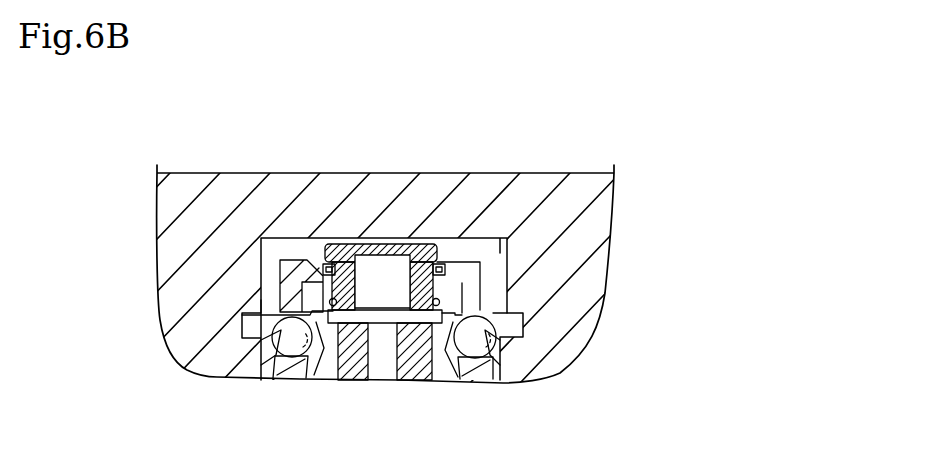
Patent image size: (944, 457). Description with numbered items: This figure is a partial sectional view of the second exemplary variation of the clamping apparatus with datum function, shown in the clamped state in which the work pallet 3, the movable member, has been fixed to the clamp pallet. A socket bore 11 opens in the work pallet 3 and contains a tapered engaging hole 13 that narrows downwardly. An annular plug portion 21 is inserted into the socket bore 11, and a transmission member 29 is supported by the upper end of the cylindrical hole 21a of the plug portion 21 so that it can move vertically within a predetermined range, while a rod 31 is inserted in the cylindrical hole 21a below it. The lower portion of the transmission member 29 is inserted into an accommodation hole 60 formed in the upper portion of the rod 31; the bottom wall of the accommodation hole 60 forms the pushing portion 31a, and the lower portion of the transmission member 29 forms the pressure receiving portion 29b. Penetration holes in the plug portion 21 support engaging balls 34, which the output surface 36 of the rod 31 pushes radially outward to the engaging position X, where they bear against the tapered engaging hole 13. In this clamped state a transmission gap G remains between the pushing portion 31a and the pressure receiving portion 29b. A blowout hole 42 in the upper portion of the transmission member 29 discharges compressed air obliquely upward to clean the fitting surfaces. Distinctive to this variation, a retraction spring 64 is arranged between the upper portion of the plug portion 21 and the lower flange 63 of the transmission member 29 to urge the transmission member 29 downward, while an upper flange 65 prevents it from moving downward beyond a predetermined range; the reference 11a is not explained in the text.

The work pallet 3 is at (563, 174).
The engaging position X is at (213, 94).
The socket bore 11 is at (500, 259).
The housing projection 11a is at (440, 260).
The tapered engaging hole 13 is at (258, 360).
The plug portion 21 is at (293, 251).
The cylindrical hole 21a is at (310, 380).
The transmission member 29 is at (383, 217).
The pressure receiving portion 29b is at (388, 242).
The rod 31 is at (447, 370).
The pushing portion 31a is at (407, 360).
The engaging ball 34 is at (258, 315).
The output surface 36 is at (487, 318).
The blowout hole 42 is at (329, 263).
The accommodation hole 60 is at (433, 371).
The lower flange 63 is at (437, 298).
The retraction spring 64 is at (440, 288).
The upper flange 65 is at (432, 246).
The transmission gap G is at (343, 300).